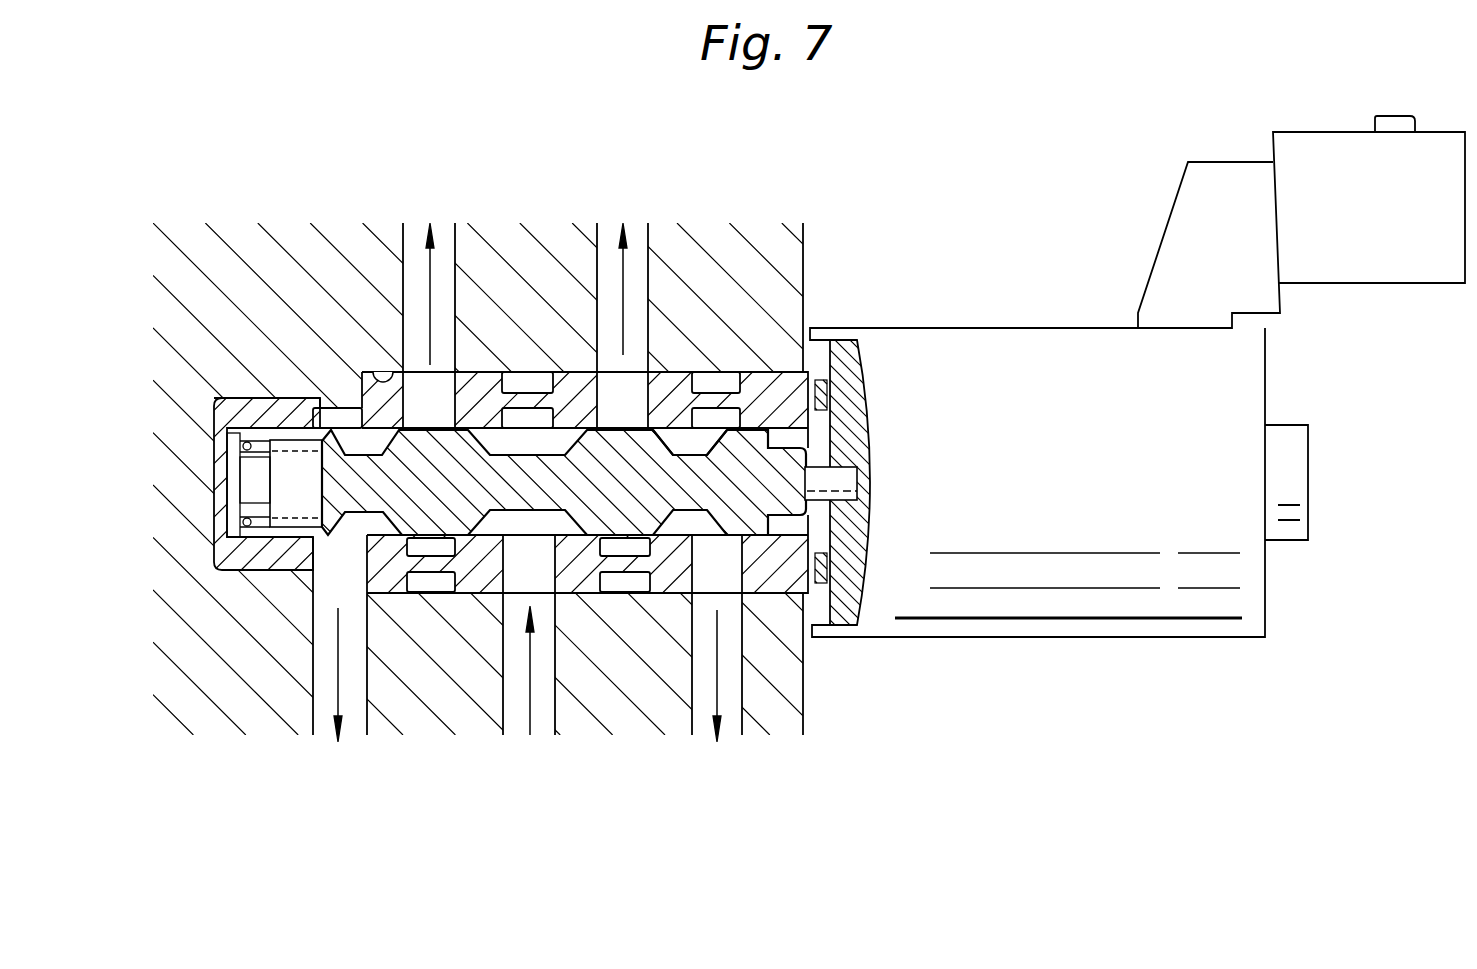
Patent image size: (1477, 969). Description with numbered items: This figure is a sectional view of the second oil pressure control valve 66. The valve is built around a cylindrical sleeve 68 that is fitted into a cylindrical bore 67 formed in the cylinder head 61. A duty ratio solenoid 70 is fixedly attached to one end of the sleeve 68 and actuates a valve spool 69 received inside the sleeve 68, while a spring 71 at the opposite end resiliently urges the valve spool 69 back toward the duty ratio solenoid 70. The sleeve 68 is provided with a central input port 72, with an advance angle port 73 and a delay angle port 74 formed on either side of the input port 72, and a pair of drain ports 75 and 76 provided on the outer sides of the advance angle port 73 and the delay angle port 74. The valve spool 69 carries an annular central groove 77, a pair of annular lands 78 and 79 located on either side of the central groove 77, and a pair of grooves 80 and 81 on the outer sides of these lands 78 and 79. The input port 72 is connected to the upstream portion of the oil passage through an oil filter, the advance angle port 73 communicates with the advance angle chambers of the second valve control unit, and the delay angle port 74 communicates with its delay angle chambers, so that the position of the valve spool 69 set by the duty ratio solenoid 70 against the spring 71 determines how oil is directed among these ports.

The cylinder head 61 is at (805, 697).
The second oil pressure control valve 66 is at (782, 360).
The cylindrical bore 67 is at (362, 455).
The cylindrical sleeve 68 is at (410, 565).
The valve spool 69 is at (800, 457).
The duty ratio solenoid 70 is at (1066, 483).
The spring 71 is at (253, 538).
The central input port 72 is at (545, 567).
The advance angle port 73 is at (437, 348).
The delay angle port 74 is at (603, 385).
The drain port 75 is at (316, 547).
The drain port 76 is at (730, 570).
The annular central groove 77 is at (502, 538).
The annular land 78 is at (430, 535).
The annular land 79 is at (622, 547).
The groove 80 is at (358, 420).
The groove 81 is at (698, 453).